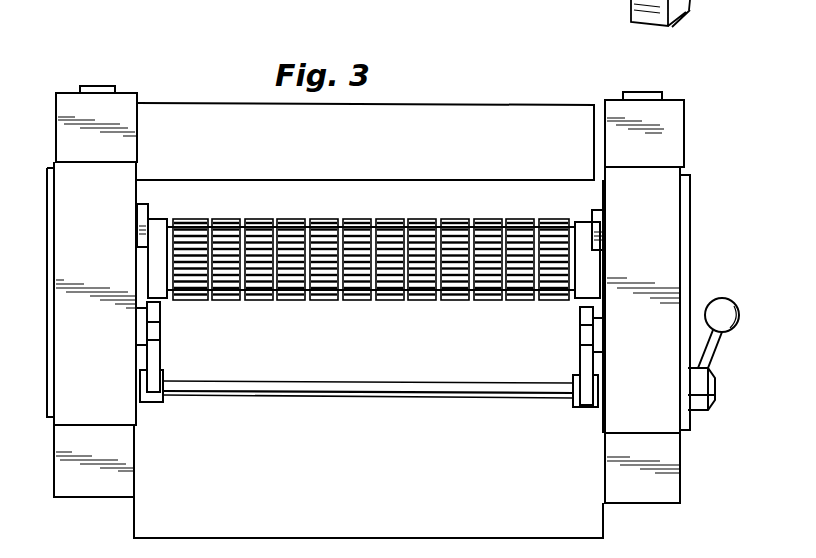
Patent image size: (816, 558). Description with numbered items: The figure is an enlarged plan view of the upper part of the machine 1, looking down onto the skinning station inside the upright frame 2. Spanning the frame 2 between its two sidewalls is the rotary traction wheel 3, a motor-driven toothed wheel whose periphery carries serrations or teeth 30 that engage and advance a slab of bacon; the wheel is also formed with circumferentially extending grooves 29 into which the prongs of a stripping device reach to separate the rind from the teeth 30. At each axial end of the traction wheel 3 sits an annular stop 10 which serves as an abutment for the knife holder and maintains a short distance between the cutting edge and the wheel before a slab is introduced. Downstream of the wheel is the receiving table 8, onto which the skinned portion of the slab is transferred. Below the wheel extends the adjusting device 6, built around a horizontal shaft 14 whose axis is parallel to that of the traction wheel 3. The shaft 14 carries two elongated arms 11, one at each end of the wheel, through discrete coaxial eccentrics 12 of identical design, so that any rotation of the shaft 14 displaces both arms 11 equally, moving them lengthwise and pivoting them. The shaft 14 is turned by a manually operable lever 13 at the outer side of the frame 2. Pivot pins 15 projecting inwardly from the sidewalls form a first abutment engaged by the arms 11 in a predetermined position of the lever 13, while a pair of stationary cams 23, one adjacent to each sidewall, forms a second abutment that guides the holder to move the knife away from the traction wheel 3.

The machine 1 is at (177, 70).
The frame 2 is at (662, 166).
The traction wheel 3 is at (374, 255).
The adjusting device 6 is at (164, 406).
The receiving table 8 is at (346, 492).
The annular stops 10 is at (157, 238).
The arms 11 is at (156, 350).
The eccentrics 12 is at (168, 388).
The lever 13 is at (712, 357).
The shaft 14 is at (372, 387).
The pivot pins 15 is at (140, 326).
The cams 23 is at (137, 223).
The grooves 29 is at (372, 219).
The teeth 30 is at (458, 292).